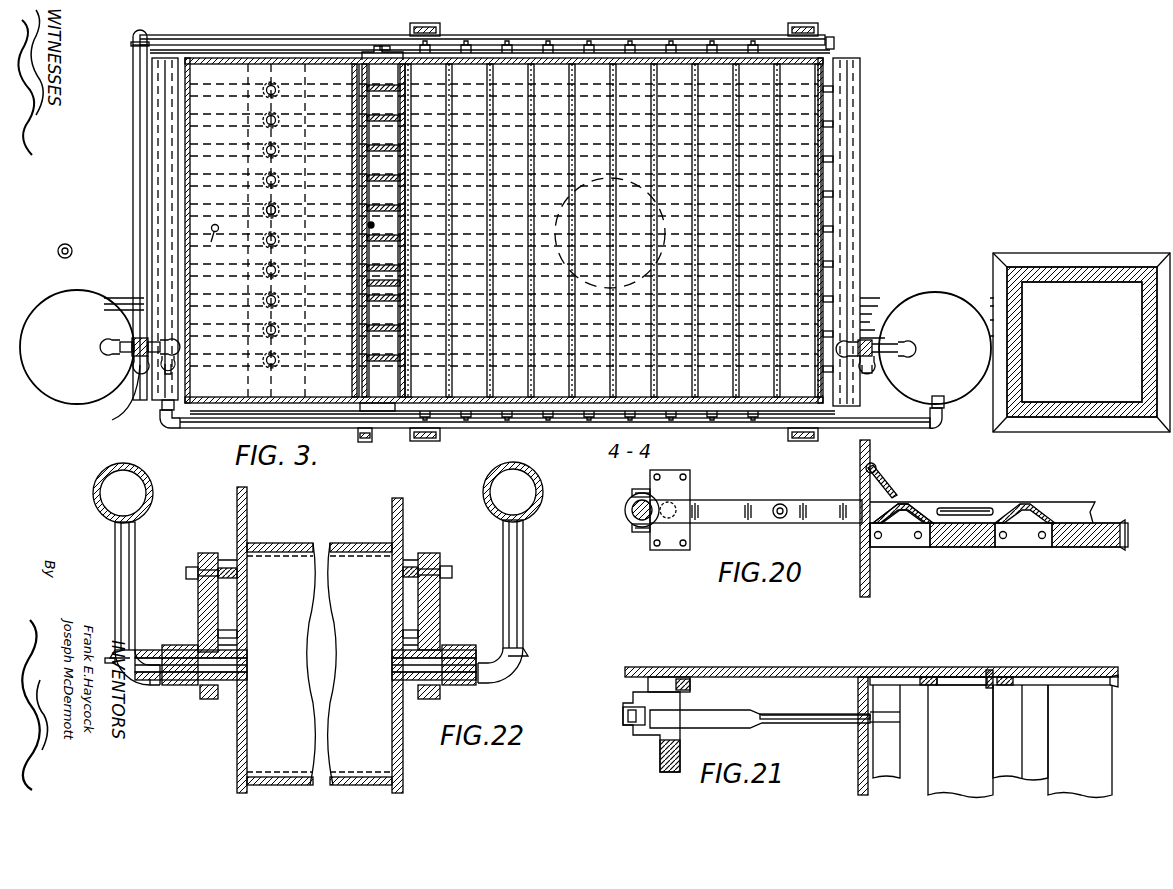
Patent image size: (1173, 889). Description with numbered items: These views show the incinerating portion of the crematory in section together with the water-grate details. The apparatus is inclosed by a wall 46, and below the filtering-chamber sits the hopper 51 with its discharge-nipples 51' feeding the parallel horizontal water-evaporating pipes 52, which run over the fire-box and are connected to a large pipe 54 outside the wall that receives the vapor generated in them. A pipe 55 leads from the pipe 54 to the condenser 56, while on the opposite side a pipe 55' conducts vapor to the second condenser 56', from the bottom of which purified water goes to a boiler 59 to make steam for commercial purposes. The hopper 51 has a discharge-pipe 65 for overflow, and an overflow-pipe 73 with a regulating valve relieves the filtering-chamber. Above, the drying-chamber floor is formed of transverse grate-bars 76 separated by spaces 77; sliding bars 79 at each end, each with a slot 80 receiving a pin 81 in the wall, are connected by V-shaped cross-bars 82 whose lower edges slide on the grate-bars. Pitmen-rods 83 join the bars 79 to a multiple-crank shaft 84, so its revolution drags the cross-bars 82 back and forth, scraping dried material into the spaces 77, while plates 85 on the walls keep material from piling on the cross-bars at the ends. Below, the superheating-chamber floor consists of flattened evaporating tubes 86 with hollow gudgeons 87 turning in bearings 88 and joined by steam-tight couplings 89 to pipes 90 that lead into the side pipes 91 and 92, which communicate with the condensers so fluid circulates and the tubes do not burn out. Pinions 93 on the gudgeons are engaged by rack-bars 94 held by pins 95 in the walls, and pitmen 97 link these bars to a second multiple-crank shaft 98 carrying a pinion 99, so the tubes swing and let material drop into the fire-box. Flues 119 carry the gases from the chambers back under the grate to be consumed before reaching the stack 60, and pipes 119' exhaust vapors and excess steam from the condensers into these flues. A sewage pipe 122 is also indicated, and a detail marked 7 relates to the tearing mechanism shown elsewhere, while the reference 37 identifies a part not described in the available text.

In FIG. 3, the slat / wall 37 is at (411, 222).
In FIG. 20, the slat / wall 37 is at (870, 566).
In FIG. 21, the slat / wall 37 is at (858, 745).
In FIG. 3, the wall 46 is at (210, 396).
In FIG. 22, the wall 46 is at (247, 508).
In FIG. 3, the hopper 51 is at (239, 225).
In FIG. 3, the discharge-nipples 51' is at (250, 271).
In FIG. 3, the water-evaporating pipes 52 is at (873, 268).
In FIG. 3, the large pipe 54 is at (165, 325).
In FIG. 3, the pipe 55 is at (892, 357).
In FIG. 3, the pipe 55' is at (164, 356).
In FIG. 3, the condenser 56 is at (935, 348).
In FIG. 3, the condenser 56' is at (77, 347).
In FIG. 3, the boiler 59 is at (868, 293).
In FIG. 3, the stack 60 is at (1142, 320).
In FIG. 3, the discharge-pipe 65 is at (217, 244).
In FIG. 3, the overflow-pipe 73 is at (383, 223).
In FIG. 3, the section indicator 7 is at (147, 390).
In FIG. 20, the grate-bars 76 is at (988, 547).
In FIG. 21, the grate-bars 76 is at (933, 737).
In FIG. 20, the spaces 77 is at (1023, 547).
In FIG. 20, the bars 79 is at (1070, 510).
In FIG. 21, the bars 79 is at (1070, 683).
In FIG. 20, the slot 80 is at (962, 508).
In FIG. 21, the slot 80 is at (958, 677).
In FIG. 20, the pin 81 is at (990, 510).
In FIG. 21, the pin 81 is at (996, 675).
In FIG. 20, the cross-bars 82 is at (905, 503).
In FIG. 21, the cross-bars 82 is at (1033, 728).
In FIG. 20, the pitmen-rods 83 is at (730, 508).
In FIG. 21, the pitmen-rods 83 is at (774, 702).
In FIG. 20, the multiple-crank shaft 84 is at (630, 513).
In FIG. 21, the multiple-crank shaft 84 is at (660, 750).
In FIG. 20, the plates 85 is at (880, 480).
In FIG. 3, the flattened evaporating tubes 86 is at (590, 237).
In FIG. 22, the flattened evaporating tubes 86 is at (345, 541).
In FIG. 22, the hollow gudgeons 87 is at (190, 680).
In FIG. 22, the bearings 88 is at (210, 699).
In FIG. 22, the couplings 89 is at (176, 645).
In FIG. 22, the pipes 90 is at (136, 578).
In FIG. 3, the pipe 91 is at (200, 433).
In FIG. 22, the pipe 91 is at (140, 503).
In FIG. 3, the pipe 92 is at (135, 262).
In FIG. 22, the pipe 92 is at (540, 508).
In FIG. 22, the pinions 93 is at (200, 700).
In FIG. 3, the rack-bars 94 is at (825, 51).
In FIG. 22, the rack-bars 94 is at (198, 600).
In FIG. 22, the pins 95 is at (186, 572).
In FIG. 3, the pitmen 97 is at (380, 50).
In FIG. 3, the multiple-crank shaft 98 is at (365, 285).
In FIG. 3, the pinion 99 is at (360, 442).
In FIG. 3, the flues 119 is at (675, 231).
In FIG. 3, the pipes 119' is at (119, 406).
In FIG. 3, the pipe 122 is at (68, 244).